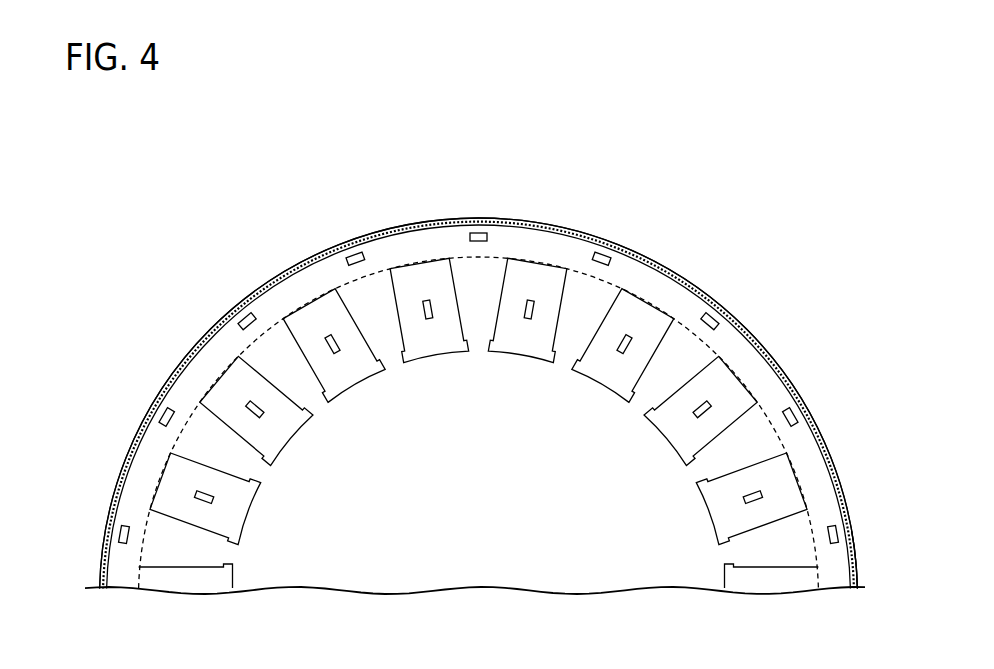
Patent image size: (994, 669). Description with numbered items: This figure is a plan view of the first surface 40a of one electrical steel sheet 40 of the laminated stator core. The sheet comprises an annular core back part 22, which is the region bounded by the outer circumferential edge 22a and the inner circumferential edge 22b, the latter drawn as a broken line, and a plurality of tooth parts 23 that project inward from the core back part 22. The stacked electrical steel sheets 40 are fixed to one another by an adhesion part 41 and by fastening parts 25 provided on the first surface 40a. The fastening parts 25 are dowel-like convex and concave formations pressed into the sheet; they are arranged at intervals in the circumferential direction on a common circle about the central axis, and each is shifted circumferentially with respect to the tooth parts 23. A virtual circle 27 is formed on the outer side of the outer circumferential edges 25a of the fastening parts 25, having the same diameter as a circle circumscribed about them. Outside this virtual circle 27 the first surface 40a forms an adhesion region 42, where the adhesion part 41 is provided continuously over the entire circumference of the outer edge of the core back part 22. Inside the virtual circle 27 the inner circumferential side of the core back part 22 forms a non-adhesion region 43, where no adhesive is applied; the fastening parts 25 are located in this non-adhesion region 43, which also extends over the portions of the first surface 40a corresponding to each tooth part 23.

The core back part 22 is at (655, 265).
The outer circumferential edge of the core back part 22a is at (157, 398).
The inner circumferential edge of the core back part 22b is at (220, 373).
The tooth part 23 is at (653, 327).
The fastening part 25 is at (607, 265).
The outer circumferential edge of the fastening part 25a is at (602, 252).
The virtual circle 27 is at (857, 568).
The electrical steel sheet 40 is at (381, 232).
The first surface of the electrical steel sheet 40a is at (660, 293).
The adhesion part 41 is at (439, 218).
The adhesion region 42 is at (479, 358).
The non-adhesion region 43 is at (642, 343).